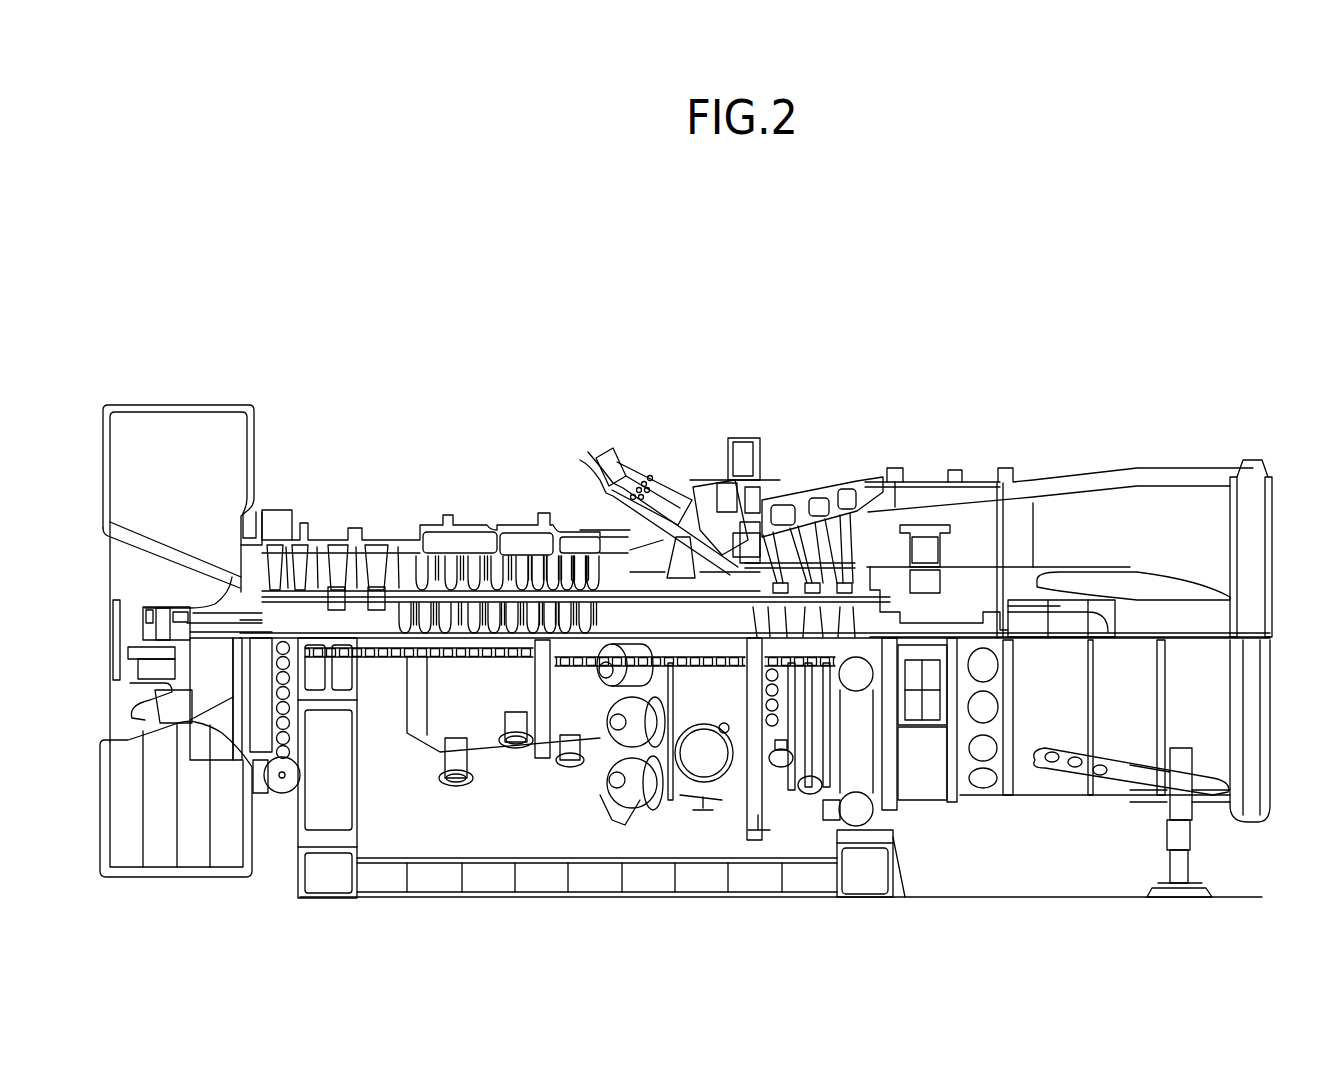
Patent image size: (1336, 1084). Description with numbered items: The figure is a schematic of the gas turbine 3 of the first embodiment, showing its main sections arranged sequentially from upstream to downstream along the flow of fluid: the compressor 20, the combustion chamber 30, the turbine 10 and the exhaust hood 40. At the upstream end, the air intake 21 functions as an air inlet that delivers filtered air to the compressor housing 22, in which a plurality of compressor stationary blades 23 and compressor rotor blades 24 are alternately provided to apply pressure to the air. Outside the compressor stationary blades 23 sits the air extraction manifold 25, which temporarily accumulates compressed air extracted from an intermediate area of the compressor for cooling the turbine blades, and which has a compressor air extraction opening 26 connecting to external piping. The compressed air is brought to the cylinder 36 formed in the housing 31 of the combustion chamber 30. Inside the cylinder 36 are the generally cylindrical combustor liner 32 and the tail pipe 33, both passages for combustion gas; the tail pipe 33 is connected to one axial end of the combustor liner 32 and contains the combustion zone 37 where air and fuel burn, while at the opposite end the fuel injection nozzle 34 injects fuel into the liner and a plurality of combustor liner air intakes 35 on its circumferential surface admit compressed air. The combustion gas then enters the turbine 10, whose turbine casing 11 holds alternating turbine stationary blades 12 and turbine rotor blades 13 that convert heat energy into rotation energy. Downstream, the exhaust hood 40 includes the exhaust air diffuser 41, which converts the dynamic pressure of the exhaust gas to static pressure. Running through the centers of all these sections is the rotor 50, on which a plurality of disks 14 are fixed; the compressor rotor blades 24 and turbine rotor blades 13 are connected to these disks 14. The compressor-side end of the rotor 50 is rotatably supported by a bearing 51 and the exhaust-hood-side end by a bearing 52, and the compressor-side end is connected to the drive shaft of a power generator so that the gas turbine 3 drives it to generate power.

The gas turbine 3 is at (1213, 303).
The turbine 10 is at (893, 366).
The turbine casing 11 is at (833, 483).
The turbine stationary blade 12 is at (780, 547).
The turbine rotor blade 13 is at (797, 553).
The disk 14 is at (416, 610).
The compressor 20 is at (588, 366).
The air intake 21 is at (180, 438).
The compressor housing 22 is at (295, 547).
The compressor stationary blade 23 is at (335, 560).
The compressor rotor blade 24 is at (356, 558).
The air extraction manifold 25 is at (433, 537).
The compressor air extraction opening 26 is at (513, 517).
The combustion chamber 30 is at (762, 366).
The housing 31 is at (722, 482).
The combustor liner 32 is at (657, 497).
The tail pipe 33 is at (695, 513).
The fuel injection nozzle 34 is at (620, 470).
The combustor liner air intake 35 is at (648, 477).
The cylinder 36 is at (708, 487).
The combustion zone 37 is at (588, 462).
The exhaust hood 40 is at (1262, 366).
The exhaust air diffuser 41 is at (977, 513).
The rotor 50 is at (653, 628).
The bearing 51 is at (118, 602).
The bearing 52 is at (933, 620).